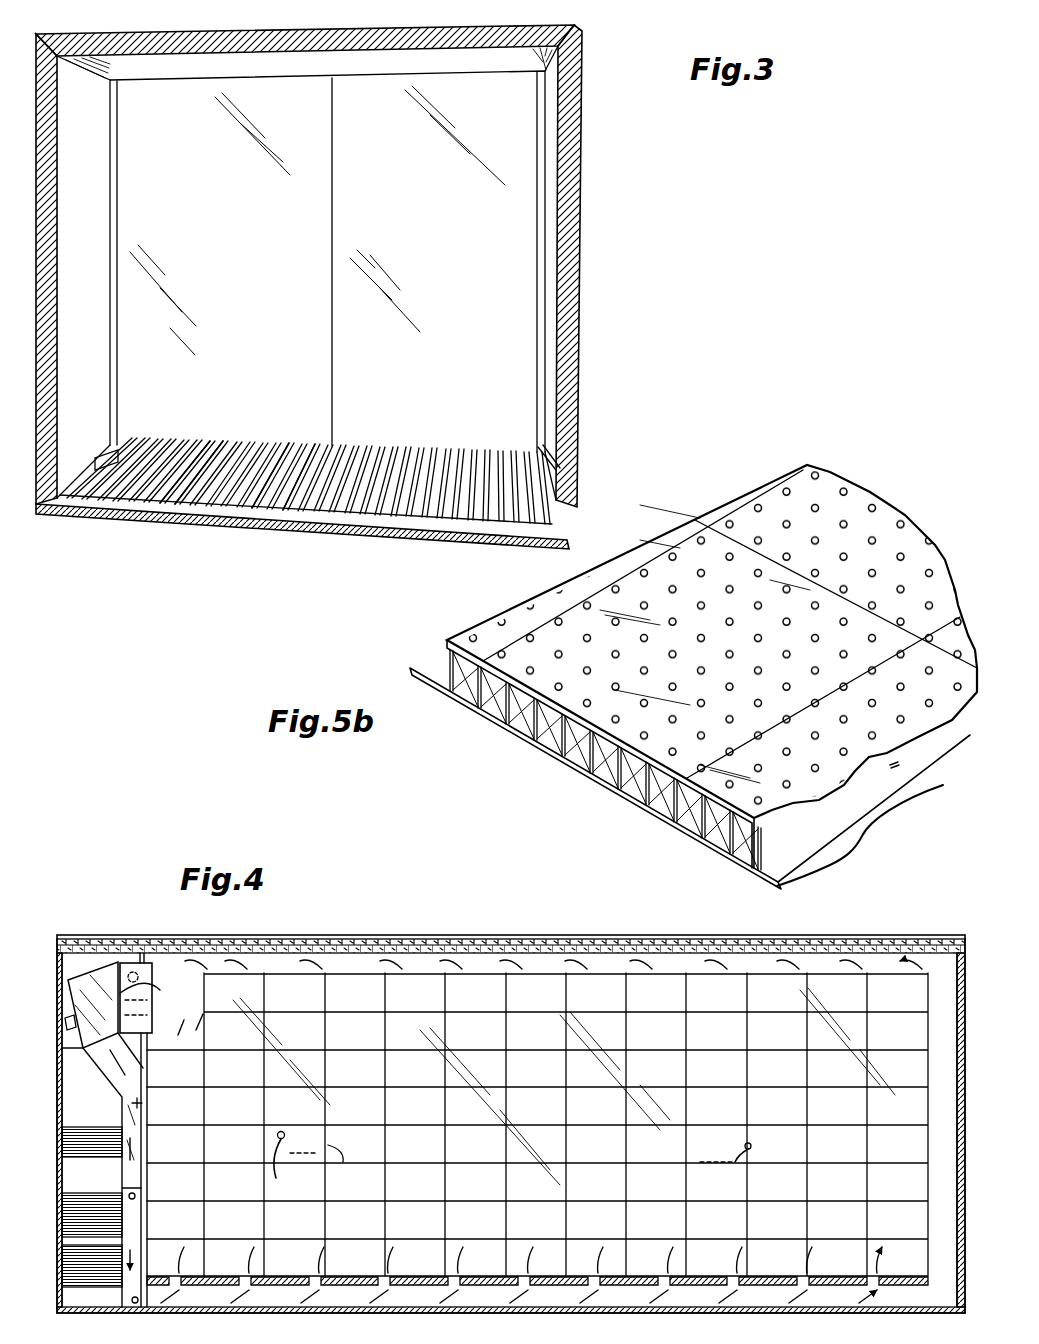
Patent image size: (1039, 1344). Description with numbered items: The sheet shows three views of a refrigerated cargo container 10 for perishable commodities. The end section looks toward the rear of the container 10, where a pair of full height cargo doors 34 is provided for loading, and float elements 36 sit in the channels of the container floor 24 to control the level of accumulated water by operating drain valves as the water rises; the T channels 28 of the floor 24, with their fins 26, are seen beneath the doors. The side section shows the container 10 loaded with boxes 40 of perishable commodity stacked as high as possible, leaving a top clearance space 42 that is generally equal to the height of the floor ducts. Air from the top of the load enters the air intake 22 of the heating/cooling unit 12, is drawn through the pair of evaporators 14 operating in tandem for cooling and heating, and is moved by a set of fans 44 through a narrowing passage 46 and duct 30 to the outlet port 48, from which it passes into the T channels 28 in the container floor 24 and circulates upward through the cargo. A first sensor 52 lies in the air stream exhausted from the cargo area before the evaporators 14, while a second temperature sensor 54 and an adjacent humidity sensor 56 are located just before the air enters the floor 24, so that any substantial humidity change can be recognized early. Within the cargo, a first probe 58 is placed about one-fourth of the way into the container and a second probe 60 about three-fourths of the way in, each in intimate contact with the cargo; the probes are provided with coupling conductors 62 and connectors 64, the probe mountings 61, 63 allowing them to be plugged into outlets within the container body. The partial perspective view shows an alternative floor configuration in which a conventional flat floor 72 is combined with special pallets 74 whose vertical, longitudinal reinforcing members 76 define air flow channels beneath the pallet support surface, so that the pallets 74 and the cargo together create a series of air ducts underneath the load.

In FIG. 3, the container 10 is at (595, 155).
In FIG. 4, the container 10 is at (482, 918).
In FIG. 4, the heating/cooling unit 12 is at (102, 1119).
In FIG. 4, the evaporators 14 is at (57, 963).
In FIG. 4, the air intake 22 is at (156, 1126).
In FIG. 3, the container floor 24 is at (377, 477).
In FIG. 4, the container floor 24 is at (283, 1287).
In FIG. 3, the louver fins 26 is at (180, 500).
In FIG. 3, the T channels 28 is at (295, 500).
In FIG. 4, the air duct 30 is at (138, 1165).
In FIG. 3, the cargo doors 34 is at (214, 200).
In FIG. 4, the cargo doors 34 is at (940, 958).
In FIG. 3, the float elements 36 is at (102, 458).
In FIG. 4, the boxes 40 is at (342, 958).
In FIG. 4, the top clearance space 42 is at (538, 968).
In FIG. 4, the fans 44 is at (96, 1040).
In FIG. 4, the narrowing passage 46 is at (142, 1105).
In FIG. 4, the outlet port 48 is at (163, 1298).
In FIG. 4, the first sensor 52 is at (139, 948).
In FIG. 4, the second temperature sensor 54 is at (135, 1308).
In FIG. 4, the humidity sensor 56 is at (137, 1215).
In FIG. 4, the first probe 58 is at (745, 1140).
In FIG. 4, the second probe 60 is at (284, 1131).
In FIG. 4, the damper stop 61 is at (702, 1160).
In FIG. 4, the coupling conductors 62 is at (754, 1153).
In FIG. 4, the damper stop 63 is at (350, 1169).
In FIG. 4, the connectors 64 is at (280, 1176).
In FIG. 5b, the flat floor 72 is at (436, 660).
In FIG. 5b, the pallets 74 is at (716, 505).
In FIG. 5b, the reinforcing members 76 is at (552, 735).